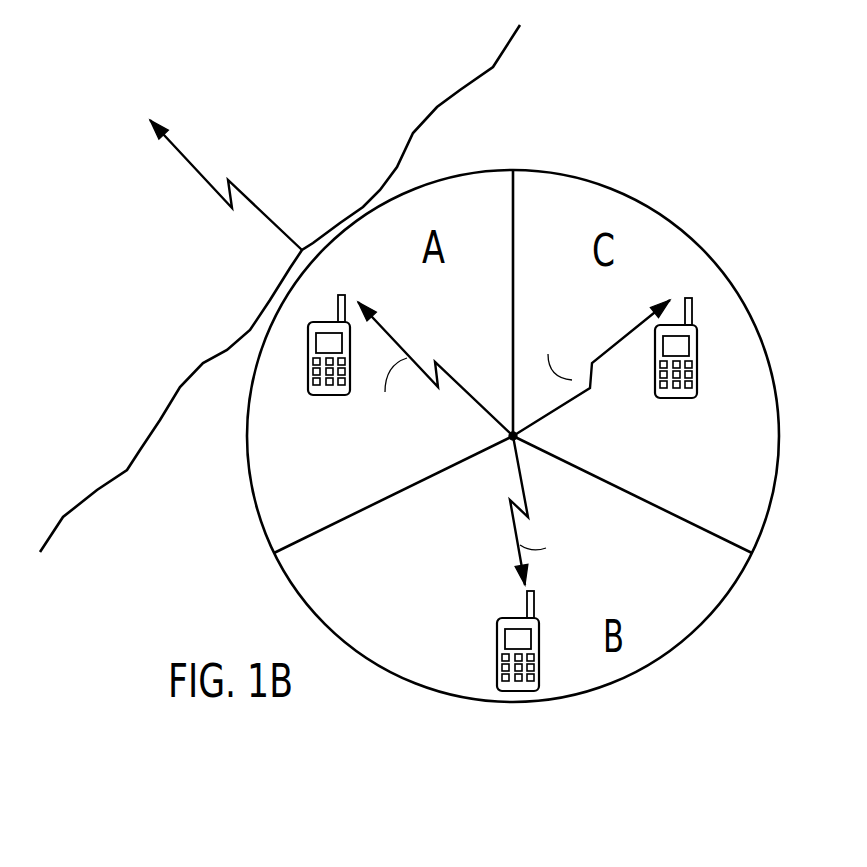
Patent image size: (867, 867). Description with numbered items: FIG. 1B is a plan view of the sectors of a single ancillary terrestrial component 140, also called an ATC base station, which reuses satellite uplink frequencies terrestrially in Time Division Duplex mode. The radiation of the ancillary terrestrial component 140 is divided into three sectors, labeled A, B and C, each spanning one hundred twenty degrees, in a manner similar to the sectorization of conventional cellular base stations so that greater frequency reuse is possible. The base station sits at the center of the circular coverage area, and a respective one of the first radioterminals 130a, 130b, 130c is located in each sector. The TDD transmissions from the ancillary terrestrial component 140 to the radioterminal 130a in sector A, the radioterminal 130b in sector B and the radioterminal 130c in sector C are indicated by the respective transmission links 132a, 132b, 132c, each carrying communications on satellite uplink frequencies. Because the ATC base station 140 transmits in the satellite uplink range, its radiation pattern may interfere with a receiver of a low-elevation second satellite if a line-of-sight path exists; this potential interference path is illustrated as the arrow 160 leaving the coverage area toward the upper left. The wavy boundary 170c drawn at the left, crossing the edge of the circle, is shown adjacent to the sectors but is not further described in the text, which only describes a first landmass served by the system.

The first radioterminal 130a is at (325, 396).
The first radioterminal 130b is at (497, 656).
The first radioterminal 130c is at (675, 399).
The transmission link 132a is at (400, 340).
The transmission link 132b is at (517, 481).
The transmission link 132c is at (555, 398).
The ancillary terrestrial component 140 is at (509, 431).
The interference path 160 is at (190, 165).
The neighboring cell boundary 170c is at (133, 460).